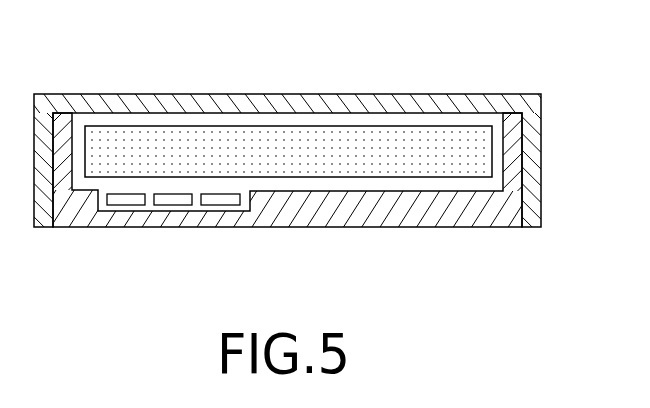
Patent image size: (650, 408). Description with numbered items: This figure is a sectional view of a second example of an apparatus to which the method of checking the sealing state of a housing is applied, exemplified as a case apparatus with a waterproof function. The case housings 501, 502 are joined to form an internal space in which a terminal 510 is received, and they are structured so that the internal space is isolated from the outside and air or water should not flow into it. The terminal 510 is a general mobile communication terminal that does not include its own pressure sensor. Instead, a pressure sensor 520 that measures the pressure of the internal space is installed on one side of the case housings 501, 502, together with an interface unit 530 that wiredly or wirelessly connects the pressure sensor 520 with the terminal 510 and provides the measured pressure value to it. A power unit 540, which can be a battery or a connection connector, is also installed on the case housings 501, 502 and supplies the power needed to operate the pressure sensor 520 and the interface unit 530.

The case housing 501 is at (387, 215).
The case housing 502 is at (272, 102).
The terminal 510 is at (482, 154).
The pressure sensor 520 is at (125, 200).
The interface unit 530 is at (172, 200).
The power unit 540 is at (221, 200).